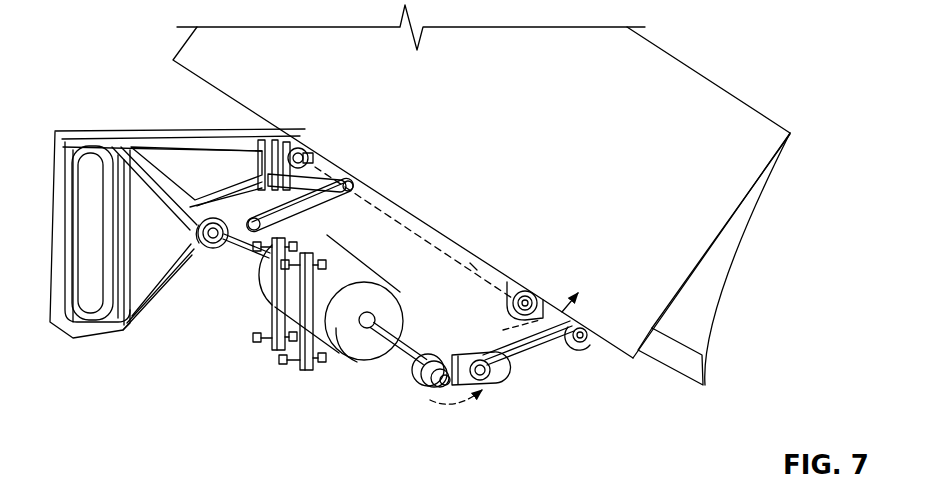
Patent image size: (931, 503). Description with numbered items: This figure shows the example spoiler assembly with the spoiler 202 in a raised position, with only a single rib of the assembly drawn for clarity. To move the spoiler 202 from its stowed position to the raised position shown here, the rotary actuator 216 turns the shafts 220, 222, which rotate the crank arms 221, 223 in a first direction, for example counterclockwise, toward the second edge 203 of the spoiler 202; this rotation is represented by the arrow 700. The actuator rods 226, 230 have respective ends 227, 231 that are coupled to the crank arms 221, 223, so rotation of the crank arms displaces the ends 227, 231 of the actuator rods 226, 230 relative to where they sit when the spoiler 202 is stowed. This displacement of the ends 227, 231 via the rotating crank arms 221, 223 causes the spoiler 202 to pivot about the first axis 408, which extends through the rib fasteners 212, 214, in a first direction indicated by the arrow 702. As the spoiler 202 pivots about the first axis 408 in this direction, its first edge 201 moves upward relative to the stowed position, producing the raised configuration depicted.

The first edge 201 is at (753, 116).
The spoiler 202 is at (670, 47).
The second edge 203 is at (433, 228).
The rib fastener 212 is at (310, 155).
The rib fastener 214 is at (558, 297).
The rotary actuator 216 is at (337, 330).
The shaft 220 is at (252, 252).
The crank arm 221 is at (212, 252).
The shaft 222 is at (402, 345).
The crank arm 223 is at (420, 376).
The actuator rod 226 is at (277, 128).
The end of actuator rod 227 is at (292, 222).
The actuator rod 230 is at (577, 340).
The end of actuator rod 231 is at (495, 384).
The first axis 408 is at (473, 264).
The arrow 700 is at (442, 405).
The arrow 702 is at (531, 360).